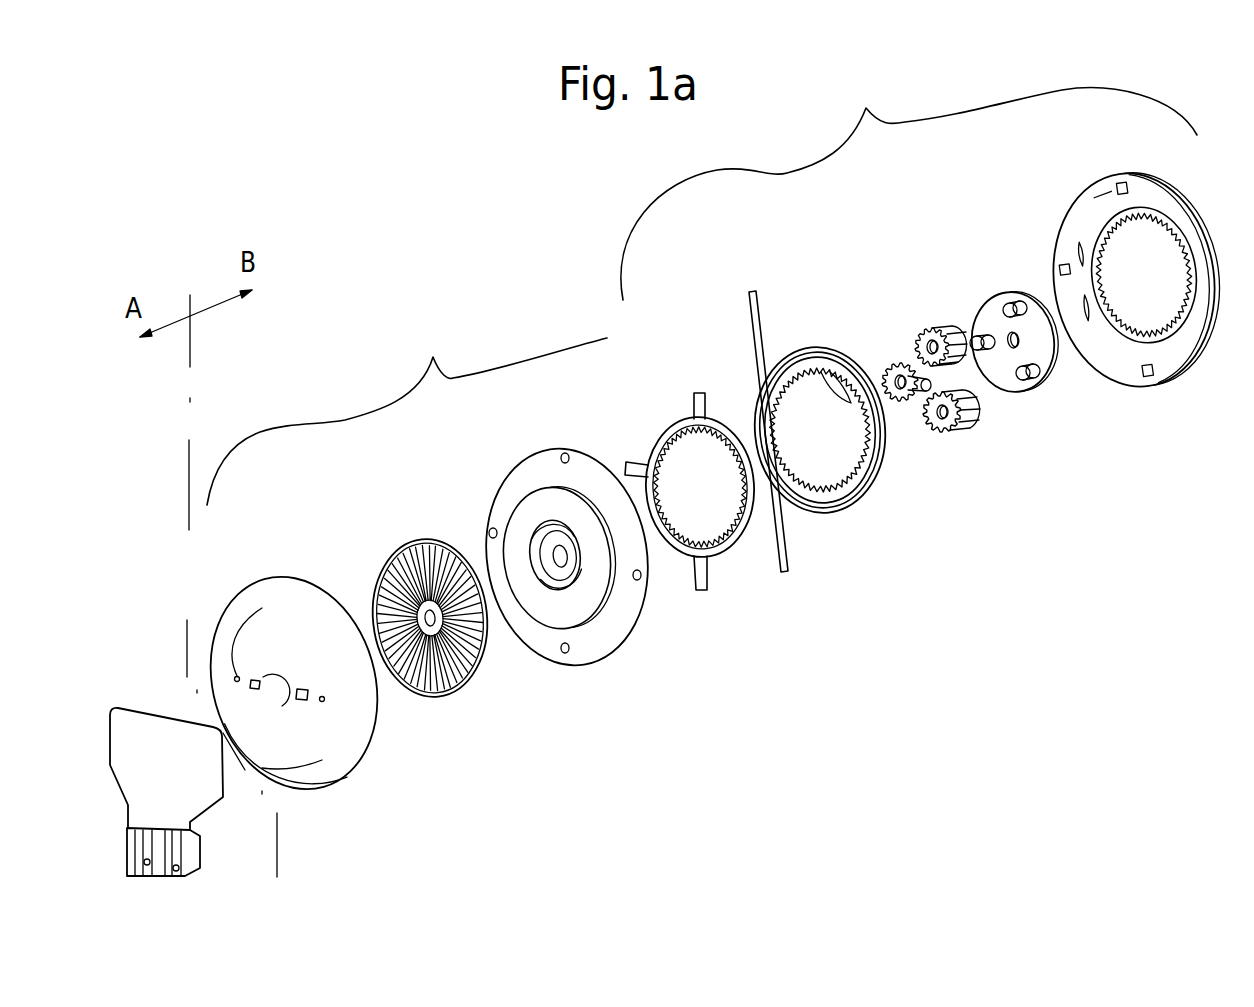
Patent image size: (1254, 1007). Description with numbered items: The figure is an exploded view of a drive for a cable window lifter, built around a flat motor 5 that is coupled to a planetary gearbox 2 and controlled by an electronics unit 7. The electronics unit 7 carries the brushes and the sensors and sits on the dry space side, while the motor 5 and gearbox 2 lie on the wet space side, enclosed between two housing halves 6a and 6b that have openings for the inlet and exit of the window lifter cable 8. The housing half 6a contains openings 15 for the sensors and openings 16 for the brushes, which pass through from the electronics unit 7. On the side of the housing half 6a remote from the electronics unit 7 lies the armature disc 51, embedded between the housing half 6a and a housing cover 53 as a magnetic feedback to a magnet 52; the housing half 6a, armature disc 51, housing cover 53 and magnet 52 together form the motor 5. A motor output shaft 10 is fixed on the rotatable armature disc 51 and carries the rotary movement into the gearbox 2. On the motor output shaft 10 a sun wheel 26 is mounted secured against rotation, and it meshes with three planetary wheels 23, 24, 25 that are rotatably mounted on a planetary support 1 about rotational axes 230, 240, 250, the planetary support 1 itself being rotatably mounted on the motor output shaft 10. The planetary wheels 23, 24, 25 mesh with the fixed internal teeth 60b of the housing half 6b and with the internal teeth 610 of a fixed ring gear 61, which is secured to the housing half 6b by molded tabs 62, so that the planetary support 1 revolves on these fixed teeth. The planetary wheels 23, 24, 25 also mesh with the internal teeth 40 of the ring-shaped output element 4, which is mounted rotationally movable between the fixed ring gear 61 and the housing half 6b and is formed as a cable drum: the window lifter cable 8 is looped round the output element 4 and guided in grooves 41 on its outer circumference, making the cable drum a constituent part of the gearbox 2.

The planetary support 1 is at (1042, 347).
The gearbox 2 is at (909, 187).
The output element 4 is at (837, 524).
The motor 5 is at (407, 407).
The housing half 6a is at (353, 752).
The housing half 6b is at (1177, 372).
The electronics unit 7 is at (107, 714).
The window lifter cable 8 is at (783, 553).
The motor output shaft 10 is at (885, 368).
The openings 15 is at (237, 678).
The openings 16 is at (255, 690).
The planetary wheel 23 is at (977, 418).
The planetary wheel 24 is at (897, 352).
The planetary wheel 25 is at (940, 322).
The sun wheel 26 is at (915, 417).
The internal teeth 40 is at (819, 365).
The grooves 41 is at (790, 353).
The armature disc 51 is at (437, 690).
The magnet 52 is at (518, 517).
The housing cover 53 is at (598, 645).
The internal teeth 60b is at (1103, 227).
The ring gear 61 is at (725, 417).
The molded tabs 62 is at (677, 407).
The rotational axis 230 is at (1023, 380).
The rotational axis 240 is at (972, 343).
The rotational axis 250 is at (1008, 303).
The internal teeth 610 is at (711, 590).